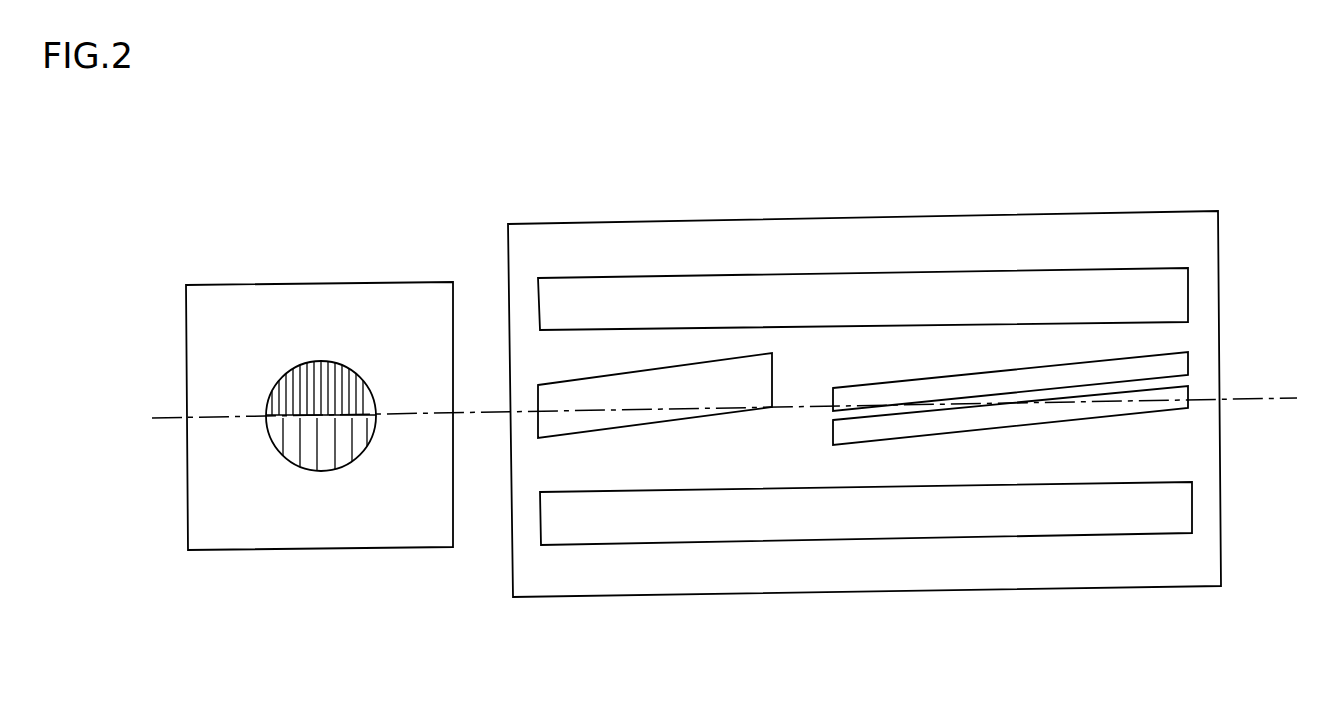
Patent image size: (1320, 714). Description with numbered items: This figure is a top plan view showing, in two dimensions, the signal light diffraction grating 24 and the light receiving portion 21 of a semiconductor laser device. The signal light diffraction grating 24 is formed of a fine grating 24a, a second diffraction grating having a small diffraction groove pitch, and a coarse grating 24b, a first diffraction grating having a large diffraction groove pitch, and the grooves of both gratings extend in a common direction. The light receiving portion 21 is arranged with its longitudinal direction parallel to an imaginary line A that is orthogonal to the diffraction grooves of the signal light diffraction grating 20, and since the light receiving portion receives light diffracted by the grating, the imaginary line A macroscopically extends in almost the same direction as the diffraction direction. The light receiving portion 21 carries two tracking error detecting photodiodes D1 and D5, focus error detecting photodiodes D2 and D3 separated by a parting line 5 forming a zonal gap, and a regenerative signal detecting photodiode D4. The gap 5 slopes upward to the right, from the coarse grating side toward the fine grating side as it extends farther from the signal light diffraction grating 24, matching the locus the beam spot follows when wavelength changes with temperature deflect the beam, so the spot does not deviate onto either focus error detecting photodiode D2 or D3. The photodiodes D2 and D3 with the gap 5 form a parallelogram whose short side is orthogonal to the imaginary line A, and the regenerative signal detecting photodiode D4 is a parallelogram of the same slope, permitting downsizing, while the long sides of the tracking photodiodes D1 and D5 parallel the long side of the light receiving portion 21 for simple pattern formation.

The parting line 5 is at (1053, 318).
The signal light diffraction grating 20 is at (383, 310).
The light receiving portion 21 is at (932, 245).
The signal light diffraction grating 24 is at (224, 416).
The fine grating 24a is at (318, 392).
The coarse grating 24b is at (320, 440).
The imaginary line A is at (1263, 399).
The tracking error detecting photodiode D1 is at (933, 510).
The focus error detecting photodiode D2 is at (1063, 413).
The focus error detecting photodiode D3 is at (1163, 367).
The regenerative signal detecting photodiode D4 is at (657, 397).
The tracking error detecting photodiode D5 is at (795, 300).